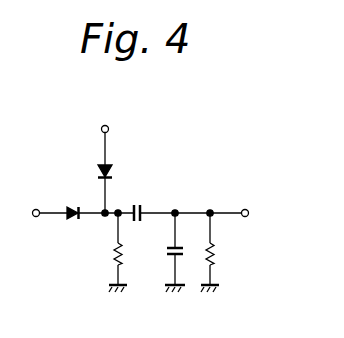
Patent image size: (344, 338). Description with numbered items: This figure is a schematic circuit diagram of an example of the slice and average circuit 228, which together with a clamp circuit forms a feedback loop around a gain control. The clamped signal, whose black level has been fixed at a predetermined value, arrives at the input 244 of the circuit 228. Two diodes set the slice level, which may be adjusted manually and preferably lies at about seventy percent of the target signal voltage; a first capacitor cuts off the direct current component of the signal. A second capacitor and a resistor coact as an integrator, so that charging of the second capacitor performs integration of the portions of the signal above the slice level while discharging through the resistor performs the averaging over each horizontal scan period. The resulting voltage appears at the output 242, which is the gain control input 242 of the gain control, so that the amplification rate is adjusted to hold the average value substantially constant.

The slice and average circuit 228 is at (187, 138).
The control input 242 is at (245, 210).
The input 244 is at (36, 216).